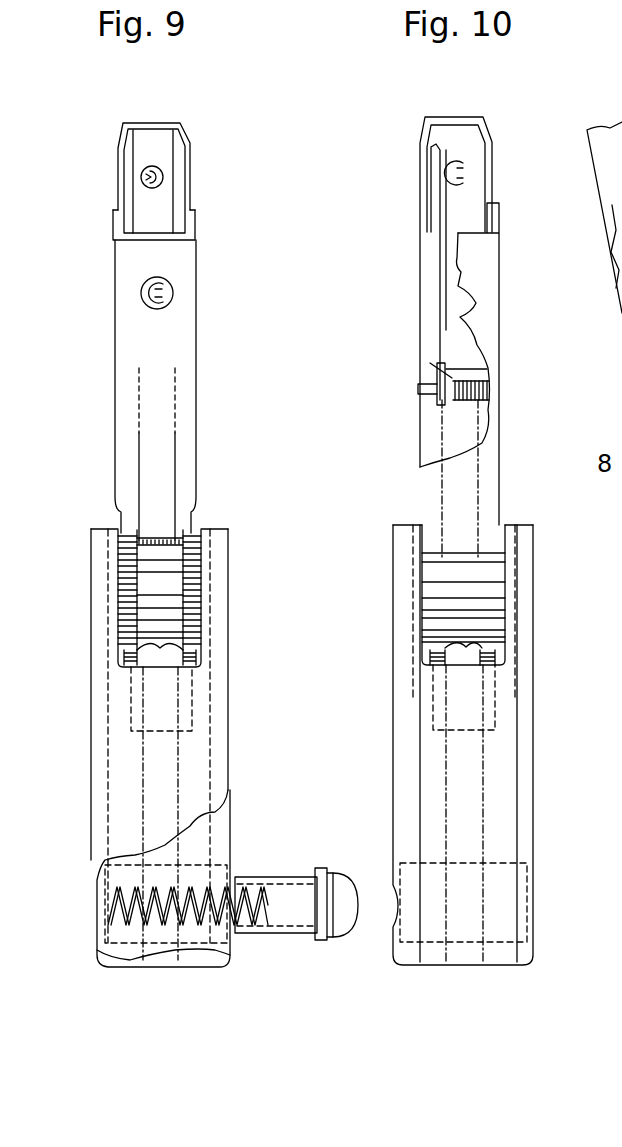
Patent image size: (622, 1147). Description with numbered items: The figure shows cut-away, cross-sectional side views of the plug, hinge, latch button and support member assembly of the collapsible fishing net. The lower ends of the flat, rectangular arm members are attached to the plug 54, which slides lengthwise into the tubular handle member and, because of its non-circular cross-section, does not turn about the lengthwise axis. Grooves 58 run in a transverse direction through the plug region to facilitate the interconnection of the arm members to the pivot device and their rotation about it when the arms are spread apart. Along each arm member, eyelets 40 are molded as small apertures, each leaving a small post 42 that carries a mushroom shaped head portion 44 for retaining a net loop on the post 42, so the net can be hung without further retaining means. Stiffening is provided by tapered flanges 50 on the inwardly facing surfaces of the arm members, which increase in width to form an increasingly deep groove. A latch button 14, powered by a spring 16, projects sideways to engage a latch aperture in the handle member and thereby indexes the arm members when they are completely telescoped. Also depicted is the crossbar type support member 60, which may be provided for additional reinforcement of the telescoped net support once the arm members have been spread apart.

In FIG. 9, the latch button 14 is at (345, 890).
In FIG. 9, the spring 16 is at (130, 897).
In FIG. 9, the eyelets 40 is at (172, 304).
In FIG. 10, the eyelets 40 is at (440, 183).
In FIG. 9, the posts 42 is at (143, 291).
In FIG. 9, the mushroom shaped head portion 44 is at (165, 290).
In FIG. 9, the tapered flanges 50 is at (121, 176).
In FIG. 10, the tapered flanges 50 is at (490, 176).
In FIG. 9, the plug 54 is at (215, 712).
In FIG. 10, the plug 54 is at (528, 727).
In FIG. 9, the grooves 58 is at (145, 570).
In FIG. 10, the grooves 58 is at (485, 657).
In FIG. 10, the support member 60 is at (440, 243).